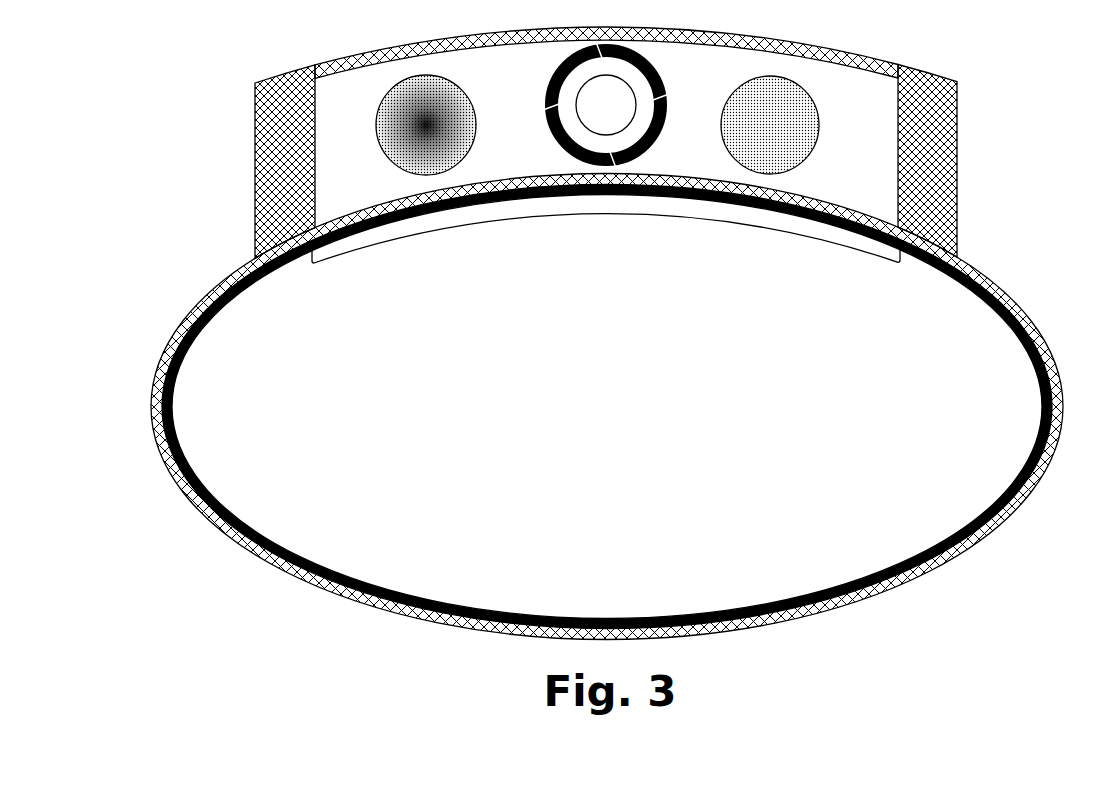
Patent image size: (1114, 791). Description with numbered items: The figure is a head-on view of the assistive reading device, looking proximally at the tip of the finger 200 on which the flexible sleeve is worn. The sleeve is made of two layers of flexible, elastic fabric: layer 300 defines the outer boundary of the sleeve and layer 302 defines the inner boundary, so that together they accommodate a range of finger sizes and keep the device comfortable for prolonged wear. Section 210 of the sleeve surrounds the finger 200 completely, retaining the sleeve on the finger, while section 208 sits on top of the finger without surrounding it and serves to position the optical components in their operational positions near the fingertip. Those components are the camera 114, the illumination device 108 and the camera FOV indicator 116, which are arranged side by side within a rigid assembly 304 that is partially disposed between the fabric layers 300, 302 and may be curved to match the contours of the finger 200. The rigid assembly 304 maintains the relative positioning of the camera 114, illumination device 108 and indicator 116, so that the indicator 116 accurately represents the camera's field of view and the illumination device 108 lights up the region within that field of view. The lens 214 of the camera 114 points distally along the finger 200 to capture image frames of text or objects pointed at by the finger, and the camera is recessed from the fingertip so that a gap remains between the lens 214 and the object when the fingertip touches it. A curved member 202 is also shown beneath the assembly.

The illumination device 108 is at (476, 124).
The camera 114 is at (657, 72).
The lens 214 is at (636, 104).
The camera FOV indicator 116 is at (818, 127).
The finger 200 is at (589, 413).
The curved panel 202 is at (591, 214).
The section 208 is at (964, 68).
The section 210 is at (1066, 357).
The layer 300 is at (193, 513).
The layer 302 is at (232, 537).
The rigid assembly 304 is at (898, 153).